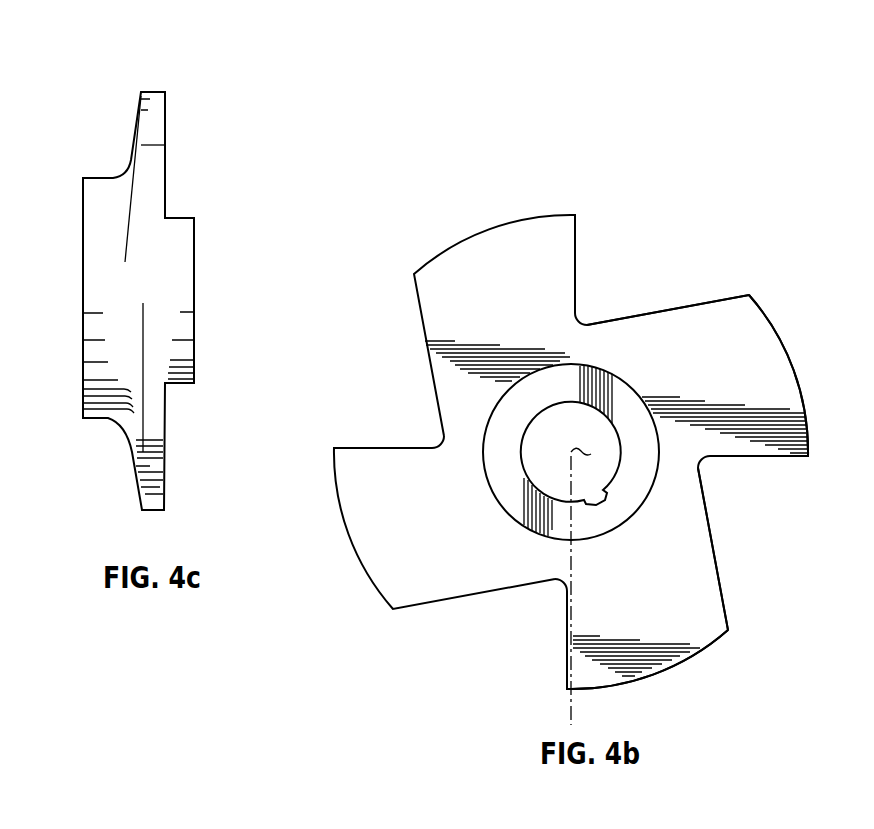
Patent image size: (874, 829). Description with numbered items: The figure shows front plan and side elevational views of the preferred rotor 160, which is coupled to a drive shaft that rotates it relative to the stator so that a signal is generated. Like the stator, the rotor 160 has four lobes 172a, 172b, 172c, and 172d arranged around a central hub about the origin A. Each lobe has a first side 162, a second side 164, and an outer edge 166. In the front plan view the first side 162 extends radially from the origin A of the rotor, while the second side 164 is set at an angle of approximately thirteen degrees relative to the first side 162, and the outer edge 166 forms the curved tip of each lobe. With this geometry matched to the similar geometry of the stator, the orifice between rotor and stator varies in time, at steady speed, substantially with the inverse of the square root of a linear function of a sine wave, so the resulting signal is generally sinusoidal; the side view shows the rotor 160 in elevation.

In FIG. 4C, the rotor 160 is at (128, 293).
In FIG. 4B, the rotor 160 is at (494, 670).
In FIG. 4B, the first side 162 is at (760, 458).
In FIG. 4B, the second side 164 is at (648, 318).
In FIG. 4C, the outer edge 166 is at (150, 91).
In FIG. 4B, the outer edge 166 is at (808, 412).
In FIG. 4B, the lobe 172a is at (444, 526).
In FIG. 4B, the lobe 172b is at (518, 293).
In FIG. 4B, the lobe 172c is at (736, 368).
In FIG. 4B, the lobe 172d is at (671, 580).